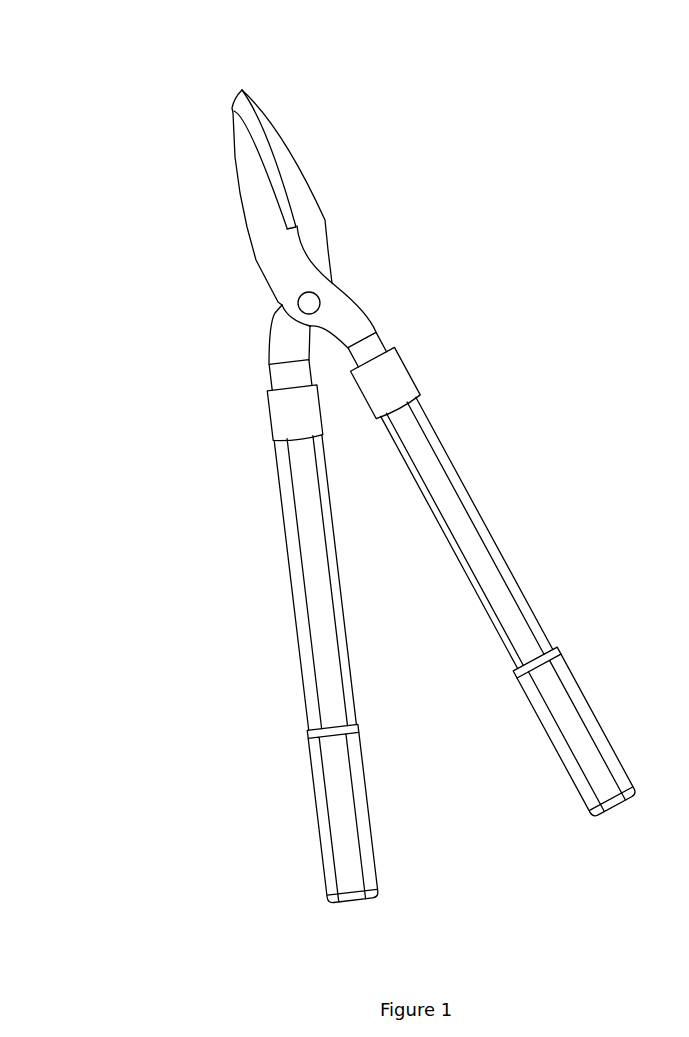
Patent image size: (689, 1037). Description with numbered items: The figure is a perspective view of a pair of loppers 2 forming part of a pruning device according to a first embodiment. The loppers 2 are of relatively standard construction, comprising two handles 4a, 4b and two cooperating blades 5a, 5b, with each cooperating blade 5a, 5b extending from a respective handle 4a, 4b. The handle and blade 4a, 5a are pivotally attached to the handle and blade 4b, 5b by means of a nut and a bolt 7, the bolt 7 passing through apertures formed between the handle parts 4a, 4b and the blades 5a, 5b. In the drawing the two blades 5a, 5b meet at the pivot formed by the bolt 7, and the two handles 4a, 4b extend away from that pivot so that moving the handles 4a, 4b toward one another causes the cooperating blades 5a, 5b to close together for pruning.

The loppers 2 is at (545, 165).
The handle 4a is at (340, 782).
The handle 4b is at (577, 738).
The cooperating blade 5a is at (288, 160).
The cooperating blade 5b is at (254, 221).
The bolt 7 is at (309, 303).